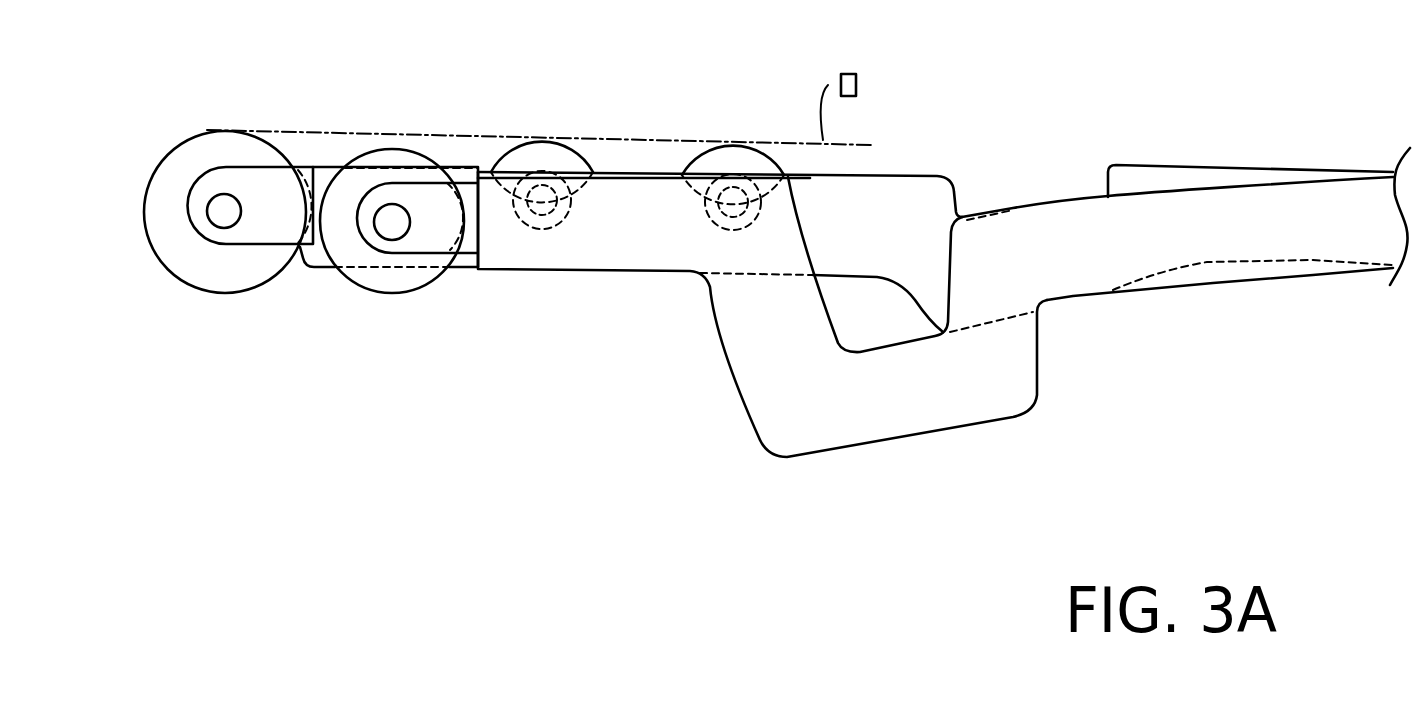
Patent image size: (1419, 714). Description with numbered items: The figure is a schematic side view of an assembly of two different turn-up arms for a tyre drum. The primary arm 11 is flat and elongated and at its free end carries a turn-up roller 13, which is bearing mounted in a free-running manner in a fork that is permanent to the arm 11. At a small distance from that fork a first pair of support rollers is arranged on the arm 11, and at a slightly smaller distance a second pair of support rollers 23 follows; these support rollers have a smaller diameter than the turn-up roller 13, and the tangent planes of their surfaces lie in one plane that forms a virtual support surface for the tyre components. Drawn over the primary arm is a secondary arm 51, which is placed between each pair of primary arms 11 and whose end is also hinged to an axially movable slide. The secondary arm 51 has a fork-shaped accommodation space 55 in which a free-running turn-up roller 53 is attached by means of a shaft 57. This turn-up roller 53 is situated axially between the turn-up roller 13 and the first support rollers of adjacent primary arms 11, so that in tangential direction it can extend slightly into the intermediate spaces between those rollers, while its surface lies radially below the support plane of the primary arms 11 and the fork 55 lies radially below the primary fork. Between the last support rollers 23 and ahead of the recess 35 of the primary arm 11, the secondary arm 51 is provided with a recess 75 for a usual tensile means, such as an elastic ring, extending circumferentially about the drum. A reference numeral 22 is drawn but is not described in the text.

The arm 11 is at (897, 203).
The turn-up roller 13 is at (190, 153).
The roller 22 is at (537, 150).
The second pair of support rollers 23 is at (735, 163).
The recess 35 is at (1017, 187).
The secondary arm 51 is at (620, 432).
The turn-up roller 53 is at (360, 187).
The fork-shaped accommodation space 55 is at (448, 230).
The shaft 57 is at (392, 227).
The recess 75 is at (880, 328).